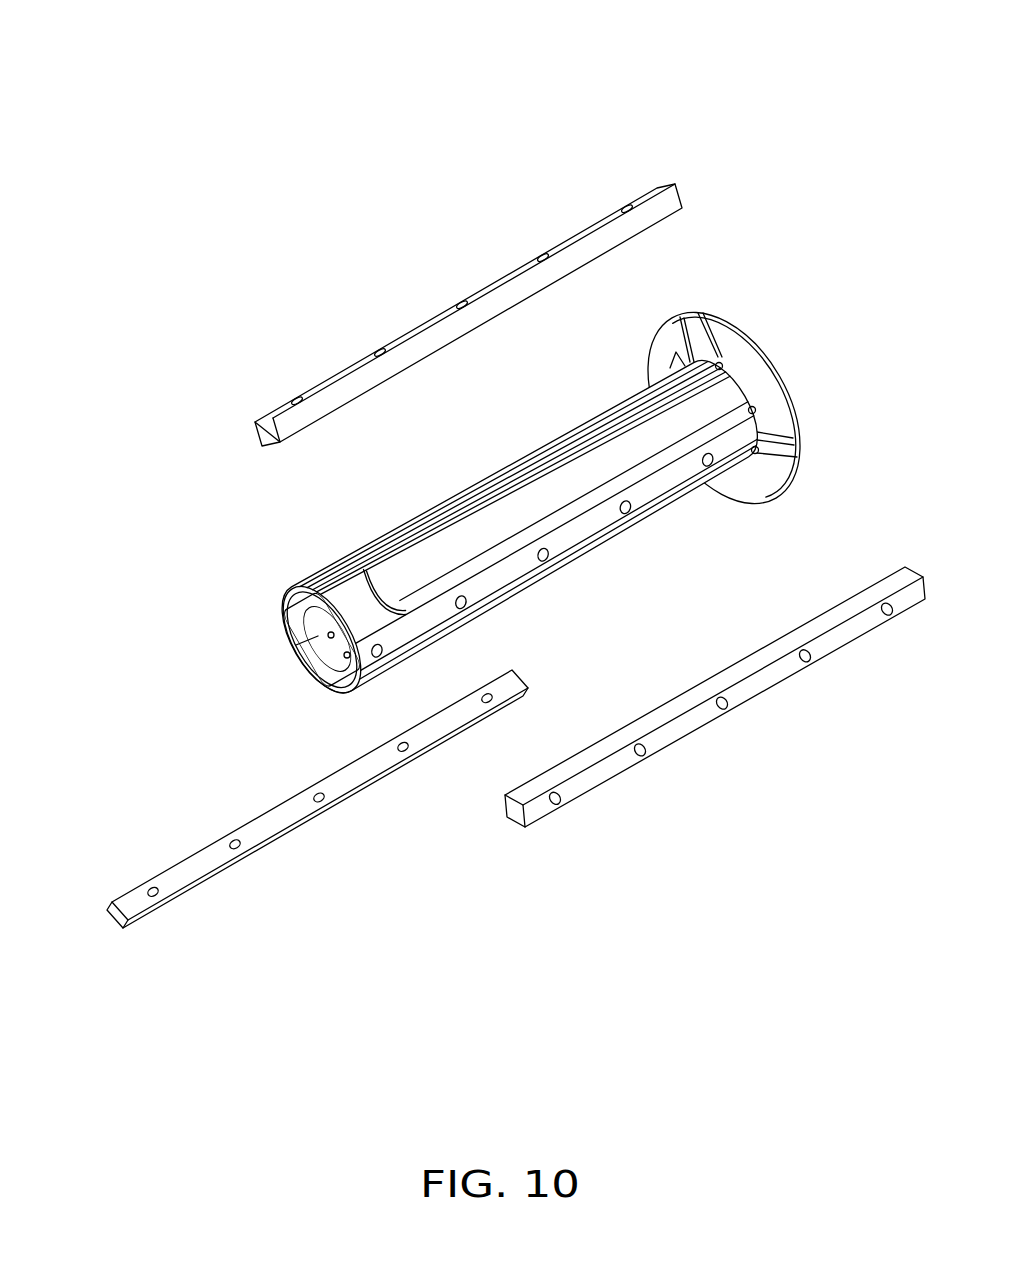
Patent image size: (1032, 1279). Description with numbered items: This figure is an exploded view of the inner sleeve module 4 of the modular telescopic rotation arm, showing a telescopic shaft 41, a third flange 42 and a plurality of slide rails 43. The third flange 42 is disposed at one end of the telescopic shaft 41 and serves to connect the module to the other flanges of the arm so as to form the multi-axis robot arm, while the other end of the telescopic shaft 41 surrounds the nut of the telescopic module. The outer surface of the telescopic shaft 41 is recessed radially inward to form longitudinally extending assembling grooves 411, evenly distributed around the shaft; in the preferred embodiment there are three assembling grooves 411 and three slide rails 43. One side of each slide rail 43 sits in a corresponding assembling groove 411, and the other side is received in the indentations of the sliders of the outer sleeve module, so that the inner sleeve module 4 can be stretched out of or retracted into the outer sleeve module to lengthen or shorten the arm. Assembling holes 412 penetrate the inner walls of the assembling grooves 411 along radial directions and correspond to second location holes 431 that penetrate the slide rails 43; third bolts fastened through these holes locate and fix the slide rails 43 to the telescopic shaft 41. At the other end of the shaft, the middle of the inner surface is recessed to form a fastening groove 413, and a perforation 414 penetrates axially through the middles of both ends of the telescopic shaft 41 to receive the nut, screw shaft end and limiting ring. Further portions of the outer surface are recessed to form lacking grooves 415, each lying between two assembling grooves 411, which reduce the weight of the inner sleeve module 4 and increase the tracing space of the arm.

The inner sleeve module 4 is at (90, 50).
The telescopic shaft 41 is at (342, 587).
The assembling grooves 411 is at (577, 541).
The assembling holes 412 is at (632, 513).
The fastening groove 413 is at (328, 648).
The perforation 414 is at (334, 624).
The lacking grooves 415 is at (412, 573).
The third flange 42 is at (777, 377).
The slide rails 43 is at (417, 330).
The second location holes 431 is at (292, 398).